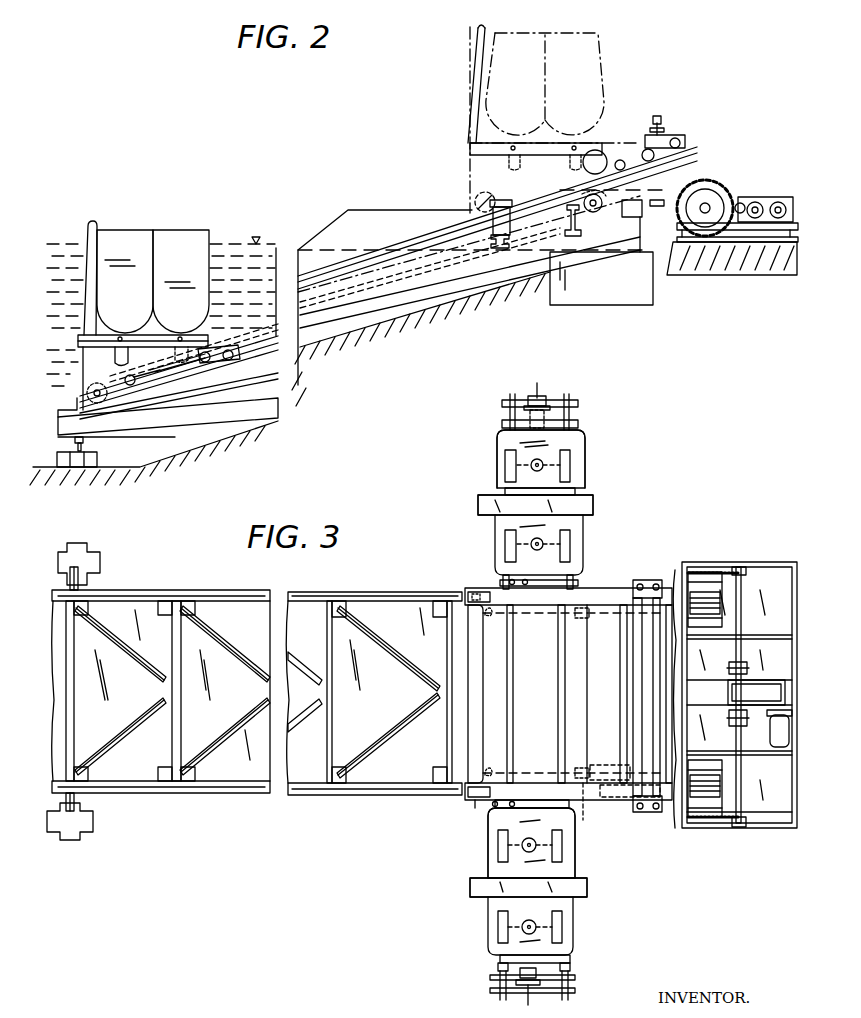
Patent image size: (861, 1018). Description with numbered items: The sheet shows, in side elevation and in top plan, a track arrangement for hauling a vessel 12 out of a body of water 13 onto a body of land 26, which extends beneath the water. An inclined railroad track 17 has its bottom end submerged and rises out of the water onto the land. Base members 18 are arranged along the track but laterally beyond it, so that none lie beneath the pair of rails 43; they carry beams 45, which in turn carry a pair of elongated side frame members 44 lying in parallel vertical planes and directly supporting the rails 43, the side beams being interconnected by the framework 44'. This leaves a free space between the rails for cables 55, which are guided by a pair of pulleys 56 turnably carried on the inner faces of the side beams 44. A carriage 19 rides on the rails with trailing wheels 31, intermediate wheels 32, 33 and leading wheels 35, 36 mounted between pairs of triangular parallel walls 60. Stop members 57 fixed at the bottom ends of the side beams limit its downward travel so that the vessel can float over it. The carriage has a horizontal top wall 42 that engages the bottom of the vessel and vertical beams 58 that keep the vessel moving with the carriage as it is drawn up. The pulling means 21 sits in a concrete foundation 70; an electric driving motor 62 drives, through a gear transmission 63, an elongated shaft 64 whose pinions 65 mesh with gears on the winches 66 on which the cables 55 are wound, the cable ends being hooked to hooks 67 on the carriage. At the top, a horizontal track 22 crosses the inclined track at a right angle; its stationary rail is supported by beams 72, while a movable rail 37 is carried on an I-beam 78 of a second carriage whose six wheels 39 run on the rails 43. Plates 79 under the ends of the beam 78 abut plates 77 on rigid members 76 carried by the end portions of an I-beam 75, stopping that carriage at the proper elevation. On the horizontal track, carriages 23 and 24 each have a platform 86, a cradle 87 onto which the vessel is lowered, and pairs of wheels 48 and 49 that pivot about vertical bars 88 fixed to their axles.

In FIG. 2, the vessel 12 is at (172, 248).
In FIG. 2, the body of water 13 is at (262, 248).
In FIG. 3, the inclined railroad track 17 is at (191, 585).
In FIG. 2, the base members 18 is at (92, 472).
In FIG. 3, the base members 18 is at (82, 558).
In FIG. 2, the carriage 19 is at (68, 341).
In FIG. 2, the pulling means 21 is at (728, 265).
In FIG. 3, the pulling means 21 is at (728, 564).
In FIG. 3, the horizontal track 22 is at (510, 412).
In FIG. 3, the carriage 23 is at (480, 909).
In FIG. 3, the carriage 24 is at (583, 479).
In FIG. 2, the body of land 26 is at (455, 357).
In FIG. 2, the trailing wheels 31 is at (474, 201).
In FIG. 3, the trailing wheels 31 is at (486, 590).
In FIG. 2, the intermediate wheel 32 is at (220, 370).
In FIG. 3, the intermediate wheel 32 is at (592, 815).
In FIG. 3, the intermediate wheel 33 is at (590, 600).
In FIG. 2, the leading wheel 35 is at (232, 358).
In FIG. 3, the leading wheel 35 is at (600, 770).
In FIG. 3, the leading wheel 36 is at (622, 600).
In FIG. 2, the movable rail 37 is at (660, 116).
In FIG. 3, the movable rail 37 is at (636, 802).
In FIG. 3, the wheels 39 is at (650, 600).
In FIG. 2, the horizontal top wall 42 is at (205, 338).
In FIG. 2, the rails 43 is at (264, 350).
In FIG. 3, the rails 43 is at (245, 592).
In FIG. 2, the side frame members 44 is at (469, 282).
In FIG. 3, the framework 44' is at (374, 693).
In FIG. 2, the beams 45 is at (86, 448).
In FIG. 3, the beams 45 is at (78, 578).
In FIG. 3, the wheels 48 is at (505, 462).
In FIG. 3, the wheels 49 is at (498, 930).
In FIG. 2, the cables 55 is at (612, 203).
In FIG. 3, the cables 55 is at (678, 600).
In FIG. 2, the pulleys 56 is at (590, 240).
In FIG. 3, the pulleys 56 is at (575, 616).
In FIG. 2, the stop members 57 is at (66, 408).
In FIG. 2, the vertical beams 58 is at (89, 240).
In FIG. 2, the parallel walls 60 is at (148, 372).
In FIG. 3, the electric driving motor 62 is at (778, 750).
In FIG. 3, the gear transmission 63 is at (762, 688).
In FIG. 2, the elongated shaft 64 is at (762, 205).
In FIG. 3, the elongated shaft 64 is at (742, 612).
In FIG. 2, the pinions 65 is at (741, 203).
In FIG. 3, the pinions 65 is at (745, 828).
In FIG. 2, the winches 66 is at (708, 200).
In FIG. 3, the winches 66 is at (700, 575).
In FIG. 3, the hooks 67 is at (488, 622).
In FIG. 2, the concrete foundation 70 is at (775, 252).
In FIG. 2, the beams 72 is at (512, 197).
In FIG. 2, the I-beam 75 is at (490, 248).
In FIG. 2, the rigid member 76 is at (512, 226).
In FIG. 3, the plate 77 is at (488, 808).
In FIG. 2, the I-beam 78 is at (650, 135).
In FIG. 2, the plates 79 is at (645, 150).
In FIG. 3, the platform 86 is at (583, 444).
In FIG. 3, the cradle 87 is at (593, 506).
In FIG. 3, the vertical bar 88 is at (545, 462).